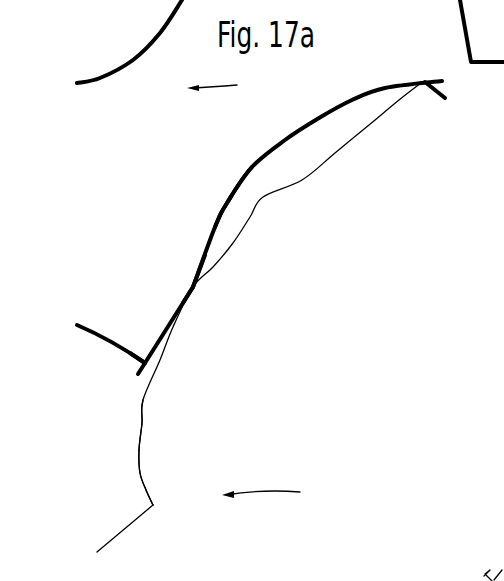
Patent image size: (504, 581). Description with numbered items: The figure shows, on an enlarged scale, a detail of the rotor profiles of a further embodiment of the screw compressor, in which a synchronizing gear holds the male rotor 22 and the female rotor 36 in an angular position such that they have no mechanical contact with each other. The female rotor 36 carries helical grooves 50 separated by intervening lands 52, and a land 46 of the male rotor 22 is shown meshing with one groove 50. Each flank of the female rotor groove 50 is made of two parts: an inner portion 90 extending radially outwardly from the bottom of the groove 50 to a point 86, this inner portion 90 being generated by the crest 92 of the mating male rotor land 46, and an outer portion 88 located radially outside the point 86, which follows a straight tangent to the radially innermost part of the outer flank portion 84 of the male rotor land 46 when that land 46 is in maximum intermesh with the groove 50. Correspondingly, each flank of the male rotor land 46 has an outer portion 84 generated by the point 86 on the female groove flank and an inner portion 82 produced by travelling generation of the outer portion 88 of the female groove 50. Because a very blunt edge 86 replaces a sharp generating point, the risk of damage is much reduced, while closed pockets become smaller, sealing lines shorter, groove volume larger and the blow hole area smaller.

The male rotor 22 is at (125, 540).
The female rotor 36 is at (98, 313).
The male rotor land 46 is at (147, 463).
The helical groove 50 is at (292, 143).
The land 52 is at (132, 330).
The inner portion of male rotor flank 82 is at (139, 432).
The outer portion of male rotor flank 84 is at (319, 139).
The point 86 is at (193, 287).
The outer portion of female rotor groove flank 88 is at (173, 320).
The inner portion of female rotor groove flank 90 is at (220, 213).
The crest 92 is at (418, 85).